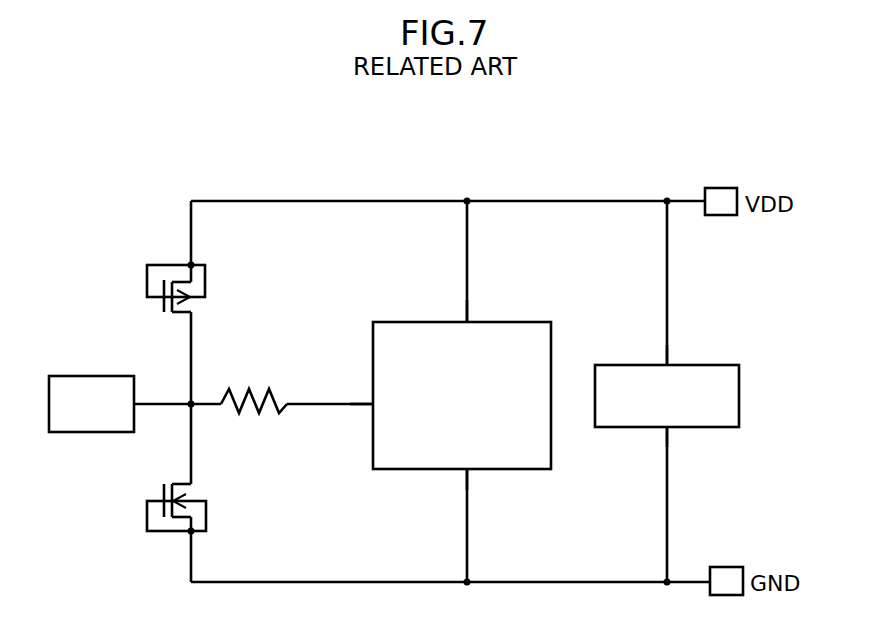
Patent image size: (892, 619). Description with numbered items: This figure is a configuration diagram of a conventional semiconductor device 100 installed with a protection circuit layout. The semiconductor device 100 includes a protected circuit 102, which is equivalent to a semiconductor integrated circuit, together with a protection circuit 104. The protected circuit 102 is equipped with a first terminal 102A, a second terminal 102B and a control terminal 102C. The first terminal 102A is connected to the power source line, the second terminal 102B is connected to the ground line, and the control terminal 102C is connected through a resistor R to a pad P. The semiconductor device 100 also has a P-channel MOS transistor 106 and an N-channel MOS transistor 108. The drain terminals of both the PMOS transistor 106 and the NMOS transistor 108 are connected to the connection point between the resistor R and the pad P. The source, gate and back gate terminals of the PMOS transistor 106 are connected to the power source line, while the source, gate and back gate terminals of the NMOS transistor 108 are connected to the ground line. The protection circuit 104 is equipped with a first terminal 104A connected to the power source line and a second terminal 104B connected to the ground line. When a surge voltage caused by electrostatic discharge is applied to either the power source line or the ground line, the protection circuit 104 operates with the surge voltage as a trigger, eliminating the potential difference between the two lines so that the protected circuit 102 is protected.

The semiconductor device 100 is at (92, 155).
The protected circuit 102 is at (514, 320).
The first terminal 102A is at (466, 320).
The second terminal 102B is at (469, 471).
The control terminal 102C is at (372, 392).
The protection circuit 104 is at (742, 398).
The first terminal 104A is at (668, 364).
The second terminal 104B is at (668, 428).
The P-channel MOS transistor 106 is at (160, 265).
The N-channel MOS transistor 108 is at (147, 513).
The pad P is at (90, 376).
The resistor R is at (284, 410).